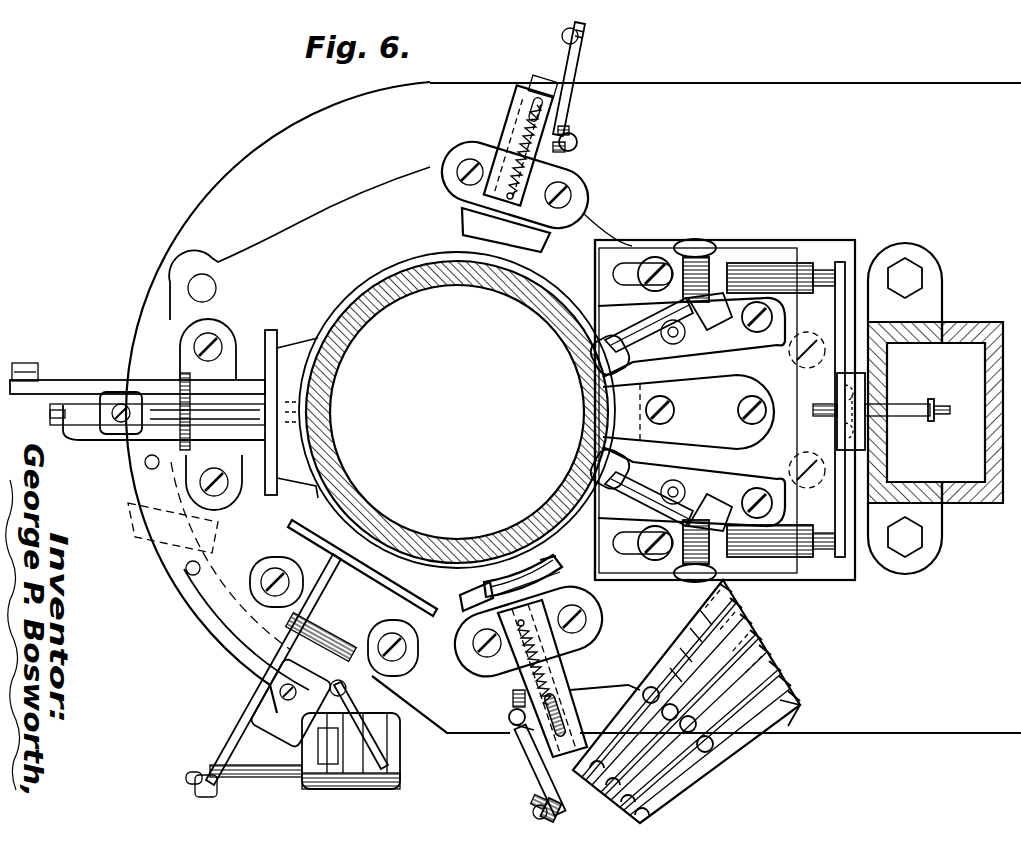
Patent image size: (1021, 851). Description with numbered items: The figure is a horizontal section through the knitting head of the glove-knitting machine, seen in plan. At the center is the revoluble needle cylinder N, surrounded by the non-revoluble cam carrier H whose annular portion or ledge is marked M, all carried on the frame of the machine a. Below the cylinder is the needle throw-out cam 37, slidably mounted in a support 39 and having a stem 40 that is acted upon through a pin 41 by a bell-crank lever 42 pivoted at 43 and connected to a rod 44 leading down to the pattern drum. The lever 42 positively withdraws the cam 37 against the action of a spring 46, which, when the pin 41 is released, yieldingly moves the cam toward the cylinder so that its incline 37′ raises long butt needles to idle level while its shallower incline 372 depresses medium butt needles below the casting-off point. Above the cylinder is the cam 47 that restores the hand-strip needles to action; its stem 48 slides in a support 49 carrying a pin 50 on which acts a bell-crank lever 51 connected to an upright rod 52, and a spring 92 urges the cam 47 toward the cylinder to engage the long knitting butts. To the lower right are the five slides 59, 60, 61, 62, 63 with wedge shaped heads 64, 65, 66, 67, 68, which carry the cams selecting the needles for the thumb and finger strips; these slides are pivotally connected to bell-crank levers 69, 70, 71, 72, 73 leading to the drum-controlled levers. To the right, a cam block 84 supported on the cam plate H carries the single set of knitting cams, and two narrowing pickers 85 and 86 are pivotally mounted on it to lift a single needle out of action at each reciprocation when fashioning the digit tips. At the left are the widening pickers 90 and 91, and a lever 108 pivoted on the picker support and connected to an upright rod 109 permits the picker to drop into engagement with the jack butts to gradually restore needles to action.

The annular portion or ledge of the cam carrier M is at (345, 301).
The revoluble needle cylinder N is at (433, 284).
The frame of the machine a is at (881, 83).
The non-revoluble cam carrier H is at (605, 226).
The needle throw-out cam 37 is at (482, 604).
The incline of the throw-out cam 37′ is at (560, 566).
The incline of the throw-out cam 372 is at (470, 585).
The support 39 is at (556, 590).
The stem 40 is at (522, 678).
The pin 41 is at (520, 728).
The bell-crank lever 42 is at (540, 770).
The pivot 43 is at (508, 712).
The rod 44 is at (536, 813).
The spring 46 is at (556, 668).
The cam 47 is at (470, 217).
The stem 48 is at (523, 128).
The support 49 is at (512, 110).
The pin 50 is at (572, 134).
The bell-crank lever 51 is at (572, 155).
The upright rod 52 is at (568, 40).
The slide 59 is at (801, 704).
The slide 60 is at (794, 693).
The slide 61 is at (757, 695).
The slide 62 is at (765, 647).
The slide 63 is at (736, 600).
The wedge shaped head 64 is at (785, 678).
The wedge shaped head 65 is at (775, 663).
The wedge shaped head 66 is at (756, 632).
The wedge shaped head 67 is at (746, 617).
The wedge shaped head 68 is at (726, 586).
The bell-crank lever 69 is at (708, 752).
The bell-crank lever 70 is at (690, 732).
The bell-crank lever 71 is at (672, 720).
The bell-crank lever 72 is at (652, 703).
The bell-crank lever 73 is at (598, 702).
The cam block 84 is at (776, 252).
The narrowing picker 85 is at (610, 492).
The narrowing picker 86 is at (586, 310).
The picker 90 is at (213, 413).
The picker 91 is at (332, 584).
The spring 92 is at (520, 154).
The lever 108 is at (240, 738).
The upright rod 109 is at (258, 774).